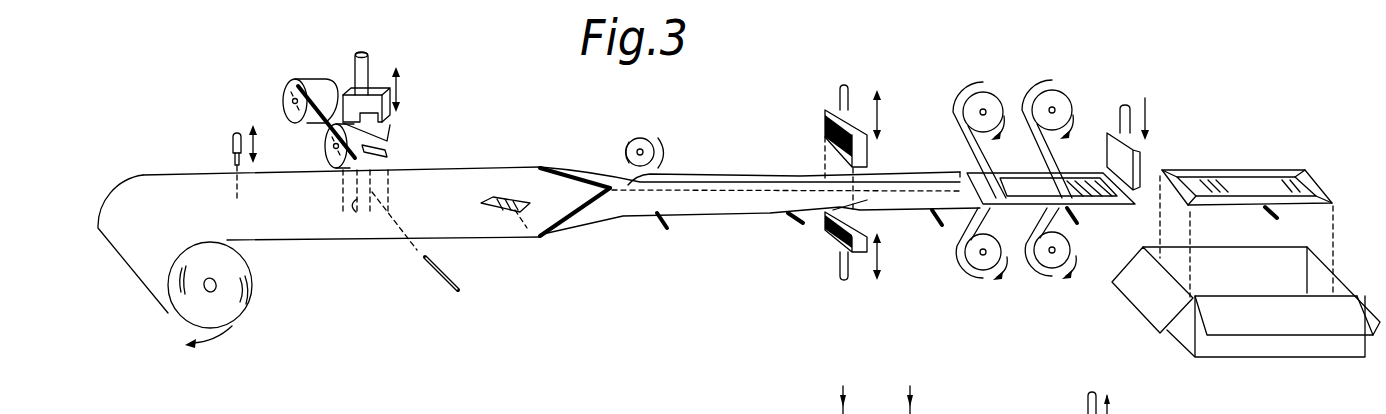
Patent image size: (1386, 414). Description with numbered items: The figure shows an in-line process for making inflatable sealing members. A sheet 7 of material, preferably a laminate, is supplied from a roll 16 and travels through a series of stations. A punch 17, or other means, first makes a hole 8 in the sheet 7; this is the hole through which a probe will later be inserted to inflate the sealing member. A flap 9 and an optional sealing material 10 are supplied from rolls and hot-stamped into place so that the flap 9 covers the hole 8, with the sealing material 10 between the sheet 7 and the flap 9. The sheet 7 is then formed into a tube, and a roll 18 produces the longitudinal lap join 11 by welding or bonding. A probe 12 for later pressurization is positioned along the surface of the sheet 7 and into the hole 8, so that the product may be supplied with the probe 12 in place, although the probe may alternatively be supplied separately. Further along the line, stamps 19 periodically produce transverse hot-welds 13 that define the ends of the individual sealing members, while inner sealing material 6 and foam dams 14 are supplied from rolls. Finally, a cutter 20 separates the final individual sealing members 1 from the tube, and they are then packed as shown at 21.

The sealing member 1 is at (1253, 168).
The inner sealing material 6 is at (1037, 88).
The sheet 7 is at (158, 190).
The hole 8 is at (362, 202).
The flap 9 is at (322, 85).
The sealing material 10 is at (326, 147).
The lap join 11 is at (740, 182).
The probe 12 is at (427, 266).
The transverse hot-welds 13 is at (822, 163).
The foam dams 14 is at (958, 97).
The roll 16 is at (243, 288).
The punch 17 is at (232, 143).
The roll 18 is at (623, 143).
The stamps 19 is at (837, 97).
The cutter 20 is at (1124, 102).
The packing 21 is at (1288, 347).